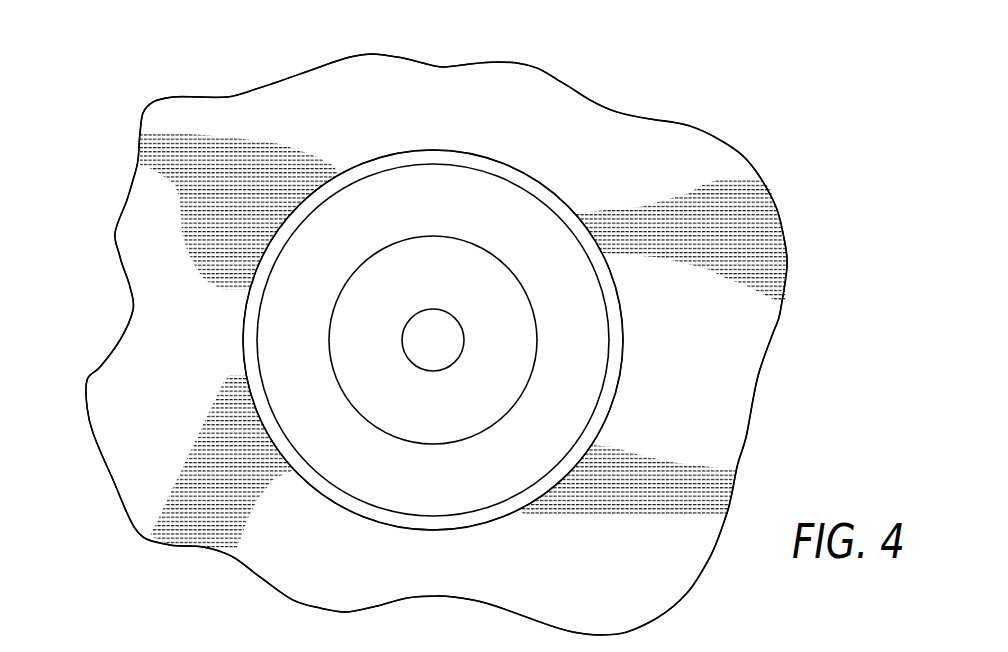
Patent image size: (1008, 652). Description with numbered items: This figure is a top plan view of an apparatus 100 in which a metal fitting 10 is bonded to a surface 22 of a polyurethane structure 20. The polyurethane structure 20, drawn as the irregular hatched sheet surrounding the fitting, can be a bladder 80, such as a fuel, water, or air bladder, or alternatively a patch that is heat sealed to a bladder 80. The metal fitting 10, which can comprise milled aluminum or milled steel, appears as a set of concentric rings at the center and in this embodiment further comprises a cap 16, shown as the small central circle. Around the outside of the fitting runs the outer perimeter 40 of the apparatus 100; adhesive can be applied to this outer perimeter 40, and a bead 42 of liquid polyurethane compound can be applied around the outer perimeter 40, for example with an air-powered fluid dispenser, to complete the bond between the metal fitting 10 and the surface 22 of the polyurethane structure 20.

The apparatus 100 is at (136, 92).
The bladder 80 is at (725, 150).
The polyurethane structure 20 is at (195, 312).
The surface 22 is at (190, 335).
The metal fitting 10 is at (495, 321).
The outer perimeter 40 is at (609, 357).
The bead 42 is at (610, 408).
The cap 16 is at (445, 323).